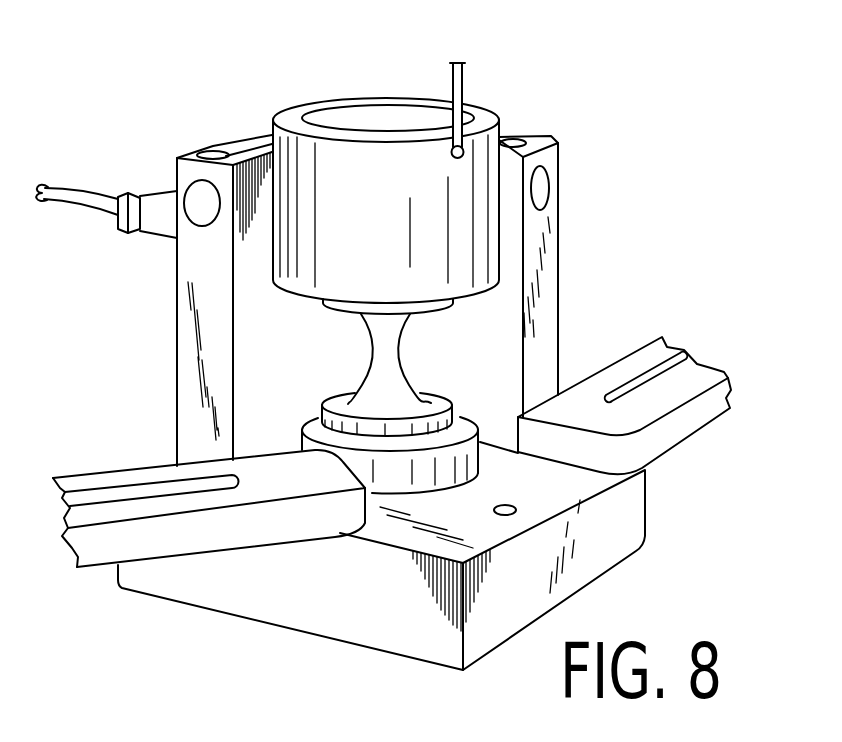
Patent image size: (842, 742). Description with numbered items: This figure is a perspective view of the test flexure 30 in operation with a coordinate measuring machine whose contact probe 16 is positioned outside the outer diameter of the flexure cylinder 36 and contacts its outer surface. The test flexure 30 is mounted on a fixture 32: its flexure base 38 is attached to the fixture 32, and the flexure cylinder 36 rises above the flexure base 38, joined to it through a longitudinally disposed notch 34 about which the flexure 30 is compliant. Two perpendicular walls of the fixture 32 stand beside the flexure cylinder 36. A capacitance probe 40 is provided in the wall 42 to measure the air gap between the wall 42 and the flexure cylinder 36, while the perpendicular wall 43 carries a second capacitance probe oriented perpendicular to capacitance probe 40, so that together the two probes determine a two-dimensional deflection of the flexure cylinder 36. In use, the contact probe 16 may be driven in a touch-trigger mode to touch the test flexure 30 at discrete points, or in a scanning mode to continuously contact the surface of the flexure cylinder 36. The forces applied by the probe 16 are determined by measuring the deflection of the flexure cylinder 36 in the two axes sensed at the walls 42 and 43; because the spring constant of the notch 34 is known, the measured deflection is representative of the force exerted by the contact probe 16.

The contact probe 16 is at (461, 83).
The test flexure 30 is at (364, 84).
The fixture 32 is at (287, 600).
The notch 34 is at (393, 357).
The flexure cylinder 36 is at (284, 102).
The flexure base 38 is at (476, 466).
The capacitance probe 40 is at (155, 193).
The wall 42 is at (178, 323).
The perpendicular wall 43 is at (551, 233).